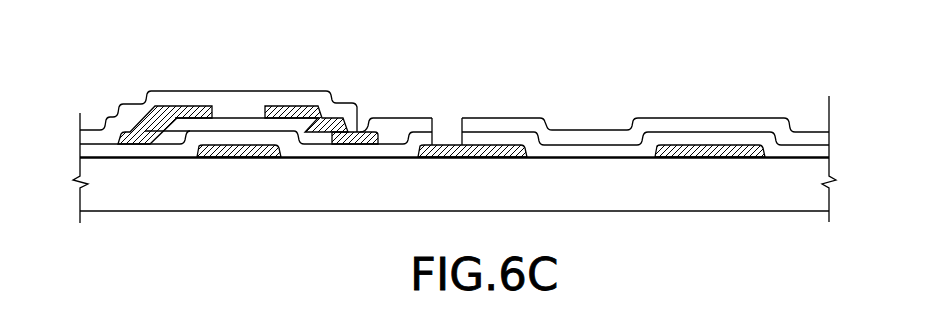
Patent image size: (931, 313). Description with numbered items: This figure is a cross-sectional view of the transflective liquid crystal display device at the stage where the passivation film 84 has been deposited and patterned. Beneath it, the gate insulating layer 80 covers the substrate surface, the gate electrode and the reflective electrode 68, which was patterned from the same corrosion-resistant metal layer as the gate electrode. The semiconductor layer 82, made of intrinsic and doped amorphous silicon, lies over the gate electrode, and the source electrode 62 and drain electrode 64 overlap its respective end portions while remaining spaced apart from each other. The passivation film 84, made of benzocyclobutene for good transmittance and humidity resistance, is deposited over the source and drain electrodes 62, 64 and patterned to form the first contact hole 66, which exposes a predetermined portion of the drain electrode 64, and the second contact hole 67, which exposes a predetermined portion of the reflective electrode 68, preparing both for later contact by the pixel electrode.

The source electrode 62 is at (169, 107).
The drain electrode 64 is at (290, 103).
The first contact hole 66 is at (362, 117).
The second contact hole 67 is at (443, 127).
The reflective electrode 68 is at (527, 153).
The gate insulating layer 80 is at (505, 137).
The semiconductor layer 82 is at (233, 123).
The passivation film 84 is at (312, 98).